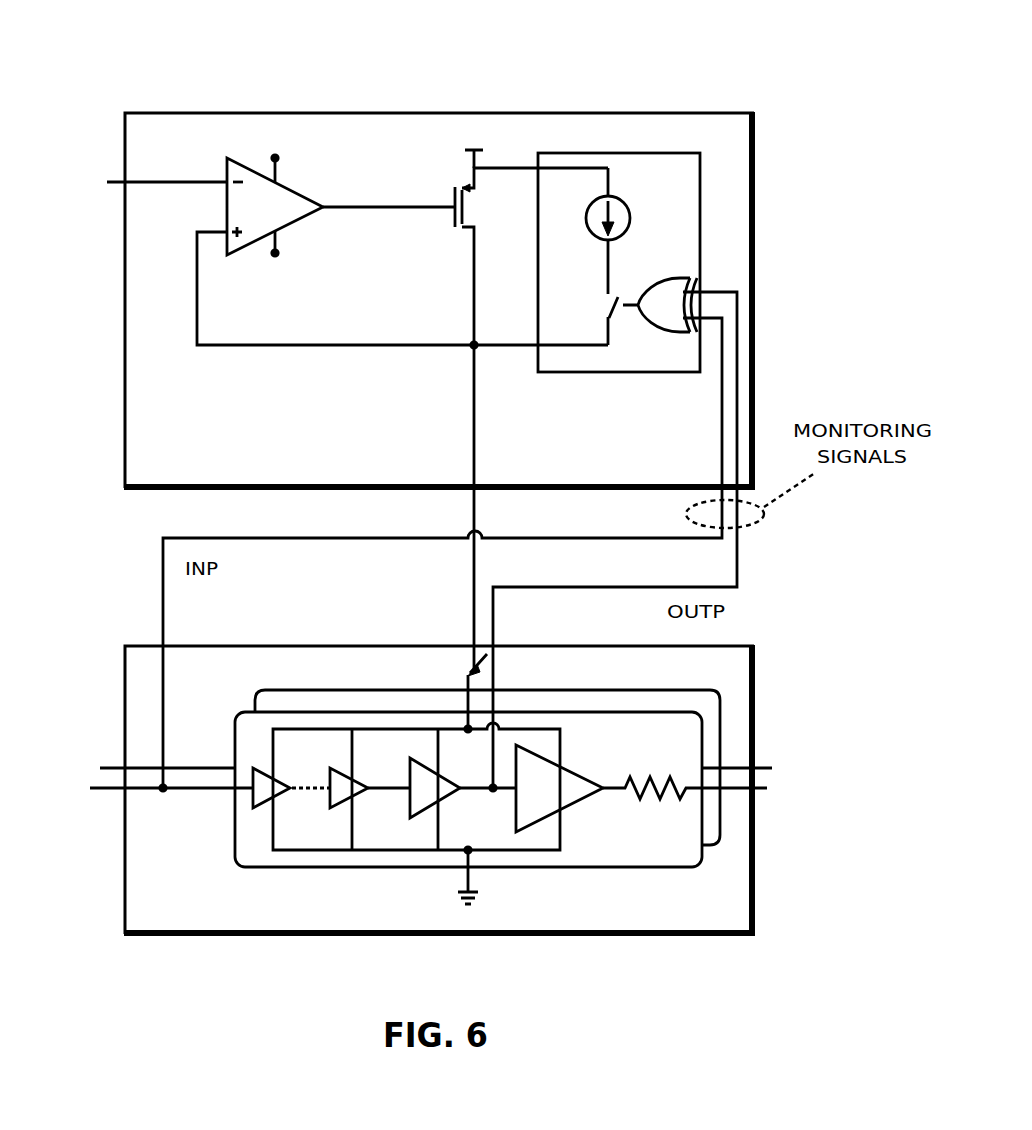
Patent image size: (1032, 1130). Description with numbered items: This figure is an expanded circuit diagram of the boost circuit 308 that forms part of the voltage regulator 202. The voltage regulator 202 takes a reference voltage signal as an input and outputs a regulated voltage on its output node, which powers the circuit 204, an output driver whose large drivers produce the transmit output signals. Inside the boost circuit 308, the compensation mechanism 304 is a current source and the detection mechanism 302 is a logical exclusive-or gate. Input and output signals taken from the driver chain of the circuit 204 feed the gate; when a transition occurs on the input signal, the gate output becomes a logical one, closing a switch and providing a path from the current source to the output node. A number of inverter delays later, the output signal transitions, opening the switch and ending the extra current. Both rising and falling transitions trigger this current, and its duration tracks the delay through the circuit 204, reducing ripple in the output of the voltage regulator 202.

The voltage regulator 202 is at (470, 345).
The circuit 204 is at (431, 789).
The detection mechanism 302 is at (682, 267).
The compensation mechanism 304 is at (625, 190).
The boost circuit 308 is at (547, 143).